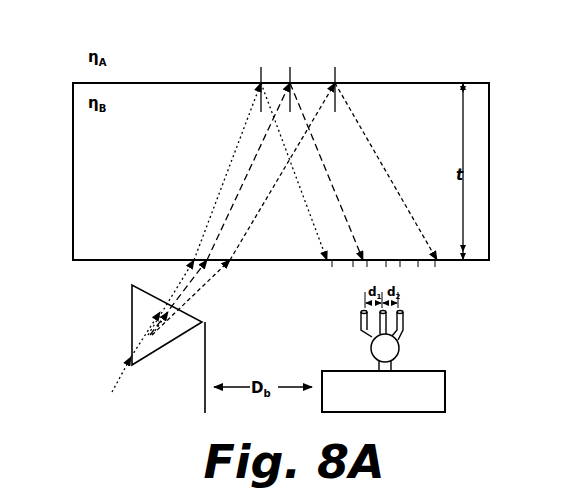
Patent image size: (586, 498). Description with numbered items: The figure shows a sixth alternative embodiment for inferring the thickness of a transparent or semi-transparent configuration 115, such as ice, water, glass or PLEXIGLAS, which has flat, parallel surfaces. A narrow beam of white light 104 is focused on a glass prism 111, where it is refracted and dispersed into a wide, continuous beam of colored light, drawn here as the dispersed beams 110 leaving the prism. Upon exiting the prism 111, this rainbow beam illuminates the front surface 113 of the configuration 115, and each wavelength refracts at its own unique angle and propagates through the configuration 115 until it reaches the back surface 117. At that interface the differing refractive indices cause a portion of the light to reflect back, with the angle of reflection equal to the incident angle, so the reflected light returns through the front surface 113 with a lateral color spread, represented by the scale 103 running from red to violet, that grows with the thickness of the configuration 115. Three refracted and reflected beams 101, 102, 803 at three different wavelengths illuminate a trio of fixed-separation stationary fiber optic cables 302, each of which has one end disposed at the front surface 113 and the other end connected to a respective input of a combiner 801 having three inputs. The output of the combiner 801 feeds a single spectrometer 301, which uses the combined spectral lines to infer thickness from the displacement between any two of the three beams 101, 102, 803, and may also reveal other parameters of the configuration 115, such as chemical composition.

The refracted and reflected beam 101 is at (248, 96).
The refracted and reflected beam 803 is at (285, 98).
The refracted and reflected beam 102 is at (320, 92).
The back surface 117 is at (436, 82).
The configuration 115 is at (281, 171).
The front surface 113 is at (318, 261).
The scale 103 is at (448, 272).
The glass prism 111 is at (132, 322).
The narrow beam of white light 104 is at (108, 378).
The refracted dispersed beams 110 is at (190, 268).
The fixed-separation stationary fiber optic cables 302 is at (375, 305).
The combiner 801 is at (400, 347).
The spectrometer 301 is at (452, 386).